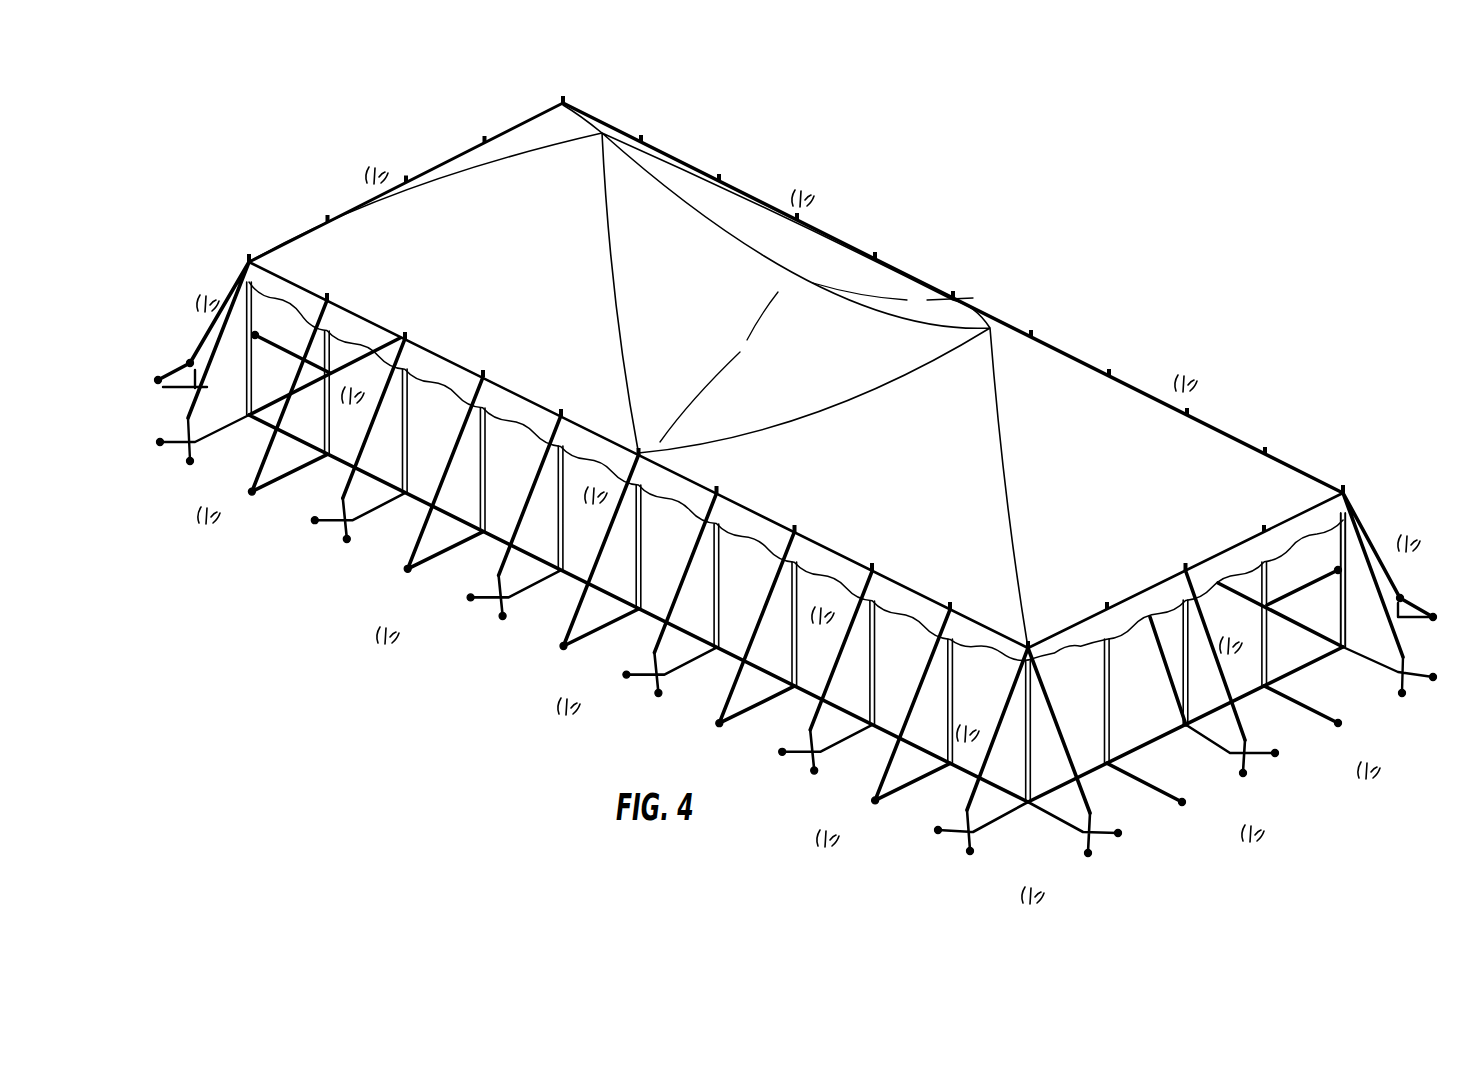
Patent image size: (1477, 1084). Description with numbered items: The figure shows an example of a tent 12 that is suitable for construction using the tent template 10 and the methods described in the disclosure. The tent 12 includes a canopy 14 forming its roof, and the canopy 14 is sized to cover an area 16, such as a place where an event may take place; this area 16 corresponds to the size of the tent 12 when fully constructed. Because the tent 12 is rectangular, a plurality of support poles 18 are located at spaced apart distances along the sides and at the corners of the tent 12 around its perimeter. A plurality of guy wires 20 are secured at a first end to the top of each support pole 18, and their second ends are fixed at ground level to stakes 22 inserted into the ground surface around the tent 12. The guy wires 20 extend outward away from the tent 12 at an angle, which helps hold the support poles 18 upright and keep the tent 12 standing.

The tent template 10 is at (787, 472).
The tent 12 is at (796, 374).
The canopy 14 is at (507, 156).
The area 16 is at (622, 565).
The support pole 18 is at (1347, 593).
The guy wire 20 is at (207, 336).
The stake 22 is at (317, 520).